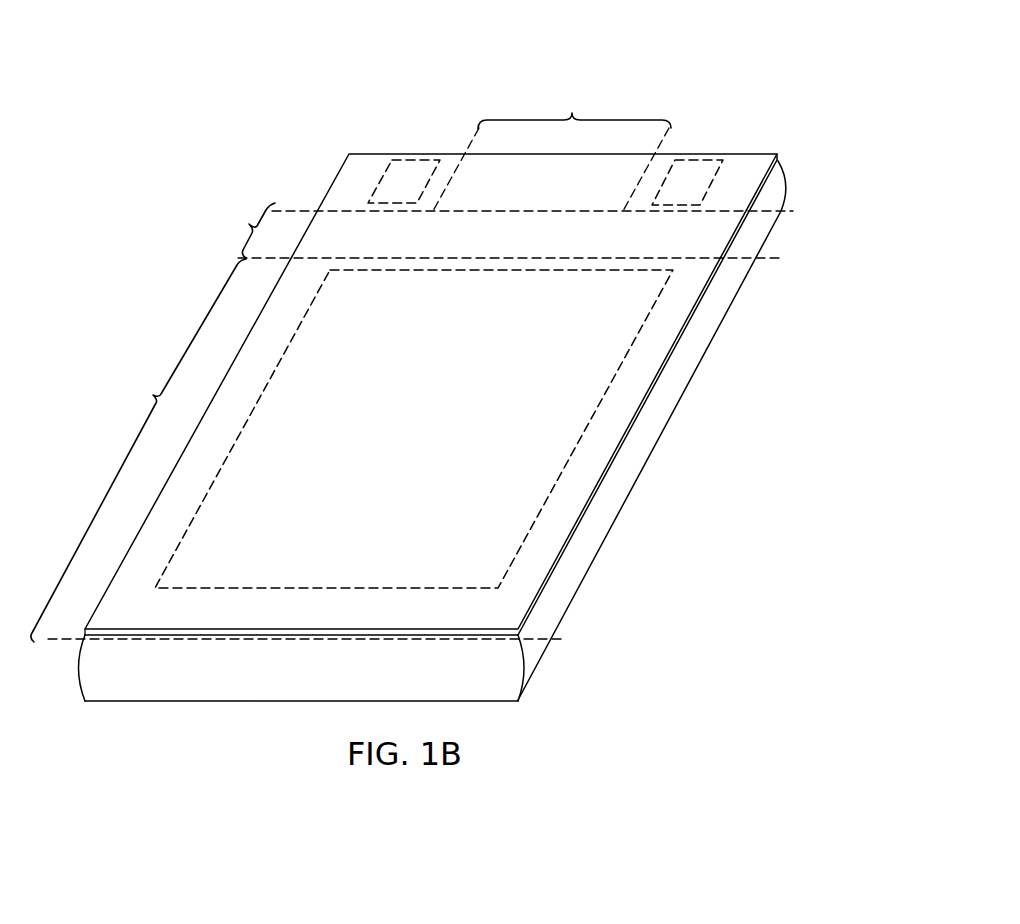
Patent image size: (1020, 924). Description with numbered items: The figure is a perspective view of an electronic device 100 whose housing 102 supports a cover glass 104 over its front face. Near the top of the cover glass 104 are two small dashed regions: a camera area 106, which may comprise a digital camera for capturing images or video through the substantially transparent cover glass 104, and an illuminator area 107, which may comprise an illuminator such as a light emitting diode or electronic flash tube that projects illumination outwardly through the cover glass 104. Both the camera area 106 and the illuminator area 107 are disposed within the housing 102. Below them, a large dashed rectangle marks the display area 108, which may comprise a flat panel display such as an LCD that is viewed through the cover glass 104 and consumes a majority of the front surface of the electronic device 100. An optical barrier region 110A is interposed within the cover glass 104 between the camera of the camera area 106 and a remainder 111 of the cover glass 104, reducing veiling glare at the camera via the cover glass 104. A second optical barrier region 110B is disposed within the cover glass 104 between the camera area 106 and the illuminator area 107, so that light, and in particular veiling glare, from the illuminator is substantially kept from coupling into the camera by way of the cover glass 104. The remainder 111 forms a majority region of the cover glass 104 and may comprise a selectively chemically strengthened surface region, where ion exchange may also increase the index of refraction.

The electronic device 100 is at (766, 92).
The housing 102 is at (786, 187).
The cover glass 104 is at (512, 607).
The camera area 106 is at (400, 157).
The illuminator area 107 is at (695, 158).
The display area 108 is at (580, 440).
The optical barrier region 110A is at (238, 222).
The optical barrier region 110B is at (564, 100).
The remainder of the cover glass 111 is at (136, 393).